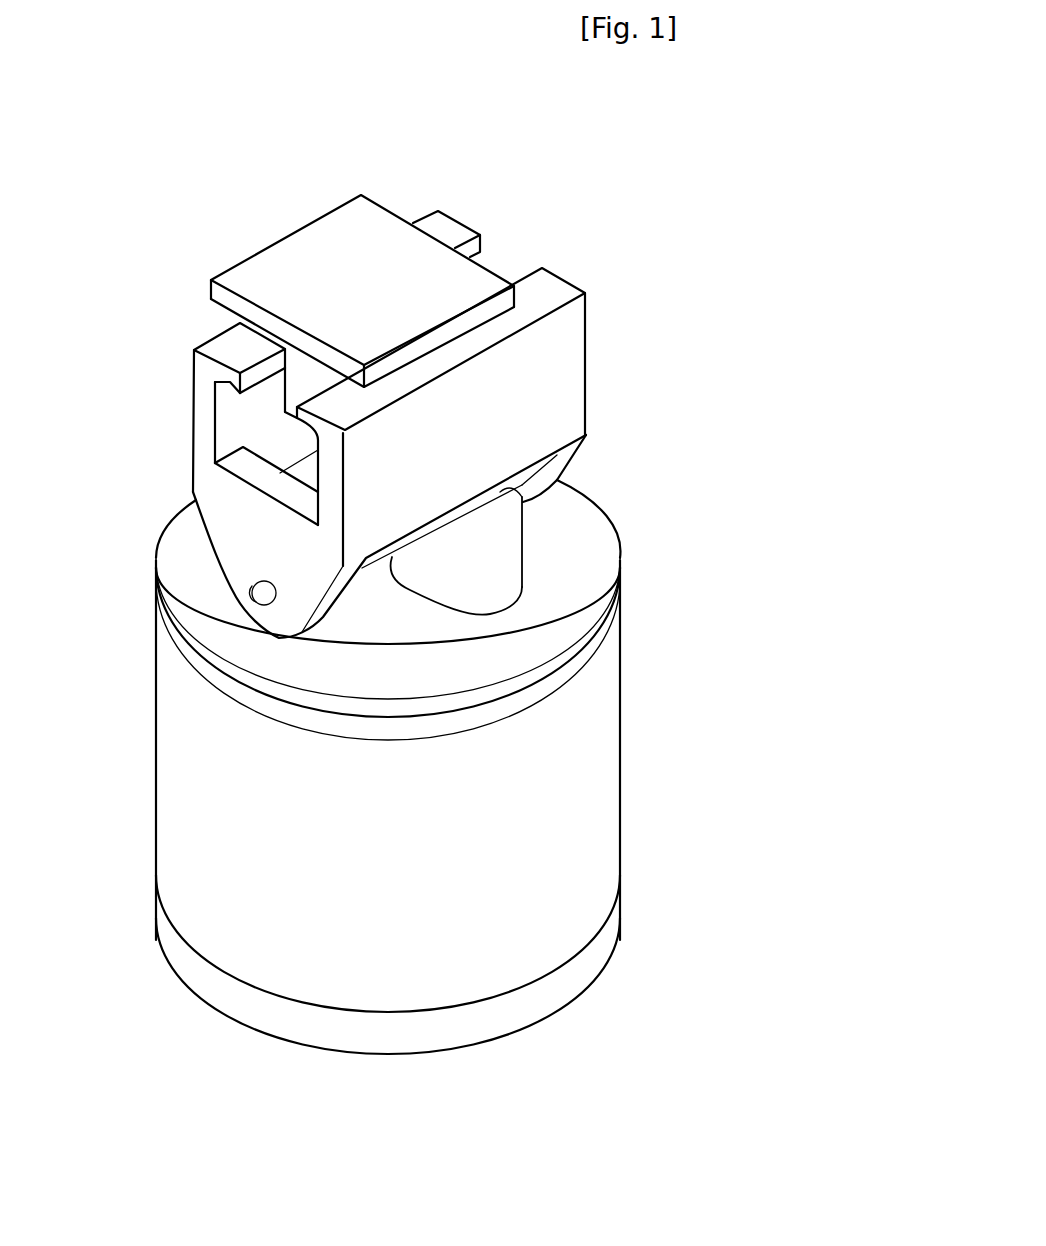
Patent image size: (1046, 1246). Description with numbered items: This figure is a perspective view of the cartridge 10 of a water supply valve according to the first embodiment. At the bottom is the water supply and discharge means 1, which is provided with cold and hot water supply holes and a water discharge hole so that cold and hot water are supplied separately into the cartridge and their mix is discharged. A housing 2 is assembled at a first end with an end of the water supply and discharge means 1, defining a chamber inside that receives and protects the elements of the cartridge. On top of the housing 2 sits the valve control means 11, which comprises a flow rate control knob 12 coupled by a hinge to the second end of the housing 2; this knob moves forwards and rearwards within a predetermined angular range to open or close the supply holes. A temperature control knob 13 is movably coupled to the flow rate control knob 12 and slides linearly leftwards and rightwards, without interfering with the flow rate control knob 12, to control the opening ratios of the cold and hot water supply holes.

The water supply and discharge means 1 is at (222, 998).
The housing 2 is at (180, 812).
The cartridge 10 is at (479, 575).
The valve control means 11 is at (528, 213).
The flow rate control knob 12 is at (548, 370).
The temperature control knob 13 is at (313, 257).